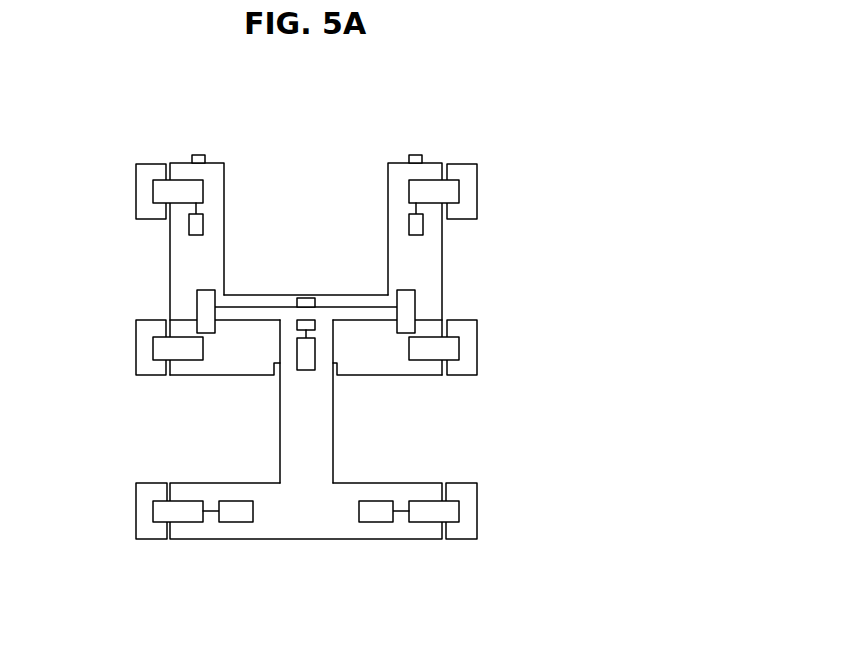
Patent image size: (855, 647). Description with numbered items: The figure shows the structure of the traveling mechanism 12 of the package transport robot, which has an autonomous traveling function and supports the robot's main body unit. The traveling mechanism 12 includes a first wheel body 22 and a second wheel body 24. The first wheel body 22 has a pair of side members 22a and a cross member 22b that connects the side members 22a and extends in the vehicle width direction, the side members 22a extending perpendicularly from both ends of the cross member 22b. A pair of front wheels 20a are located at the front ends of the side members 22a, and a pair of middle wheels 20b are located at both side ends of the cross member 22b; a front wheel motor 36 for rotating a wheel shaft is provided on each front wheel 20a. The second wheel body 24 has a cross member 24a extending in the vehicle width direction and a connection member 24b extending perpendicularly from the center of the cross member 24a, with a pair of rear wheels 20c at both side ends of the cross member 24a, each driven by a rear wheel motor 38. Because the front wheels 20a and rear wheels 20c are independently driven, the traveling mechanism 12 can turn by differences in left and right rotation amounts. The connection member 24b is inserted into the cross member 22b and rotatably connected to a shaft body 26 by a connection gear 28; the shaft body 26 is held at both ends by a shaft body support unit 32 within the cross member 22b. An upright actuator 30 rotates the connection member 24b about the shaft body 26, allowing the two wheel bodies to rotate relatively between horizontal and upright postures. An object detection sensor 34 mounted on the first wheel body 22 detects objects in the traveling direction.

The traveling mechanism 12 is at (485, 626).
The front wheel 20a is at (137, 190).
The middle wheel 20b is at (137, 348).
The rear wheel 20c is at (137, 514).
The first wheel body 22 is at (306, 272).
The side member 22a is at (214, 173).
The cross member 22b is at (262, 295).
The second wheel body 24 is at (306, 469).
The cross member 24a is at (268, 527).
The connection member 24b is at (290, 437).
The shaft body 26 is at (343, 311).
The connection gear 28 is at (308, 297).
The upright actuator 30 is at (306, 371).
The shaft body support unit 32 is at (206, 289).
The object detection sensor 34 is at (198, 154).
The front wheel motor 36 is at (188, 227).
The rear wheel motor 38 is at (238, 511).